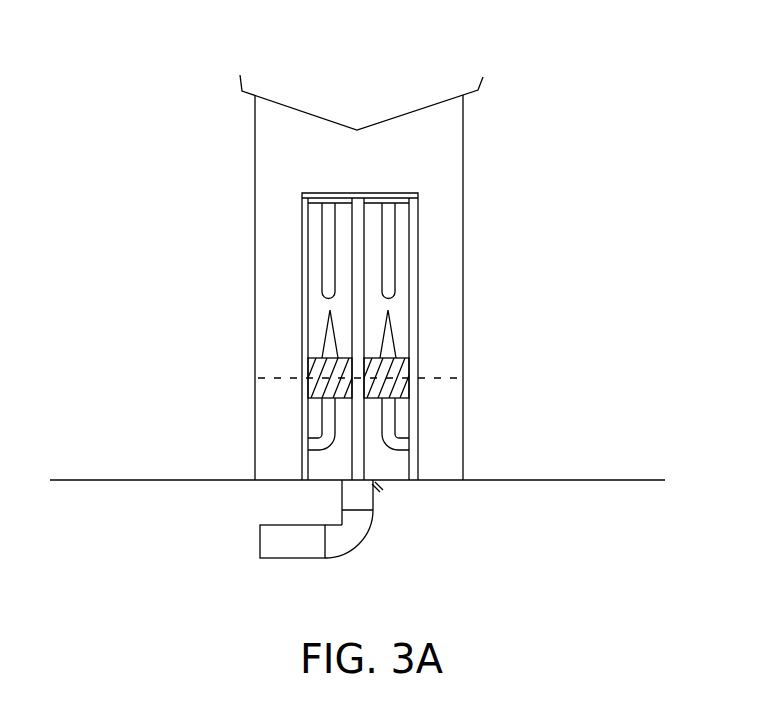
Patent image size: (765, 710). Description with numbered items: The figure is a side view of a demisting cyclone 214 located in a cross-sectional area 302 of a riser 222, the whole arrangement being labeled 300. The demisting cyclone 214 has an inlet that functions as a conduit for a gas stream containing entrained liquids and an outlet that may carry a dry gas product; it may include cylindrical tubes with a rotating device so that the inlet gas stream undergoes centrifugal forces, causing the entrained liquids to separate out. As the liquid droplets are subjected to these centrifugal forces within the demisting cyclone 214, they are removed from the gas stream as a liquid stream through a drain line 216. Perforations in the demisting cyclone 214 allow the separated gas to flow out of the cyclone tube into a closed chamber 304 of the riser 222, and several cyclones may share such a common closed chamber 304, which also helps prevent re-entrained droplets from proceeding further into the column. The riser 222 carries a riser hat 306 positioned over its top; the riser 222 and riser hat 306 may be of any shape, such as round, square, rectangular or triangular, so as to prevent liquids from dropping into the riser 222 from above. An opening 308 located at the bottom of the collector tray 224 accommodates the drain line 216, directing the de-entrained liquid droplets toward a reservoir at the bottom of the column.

The treatment device 300 is at (395, 630).
The demisting cyclone 214 is at (303, 382).
The drain line 216 is at (290, 558).
The riser 222 is at (463, 232).
The collector tray 224 is at (602, 480).
The cross-sectional area 302 is at (445, 380).
The closed chamber 304 is at (272, 145).
The riser hat 306 is at (430, 107).
The opening 308 is at (377, 488).